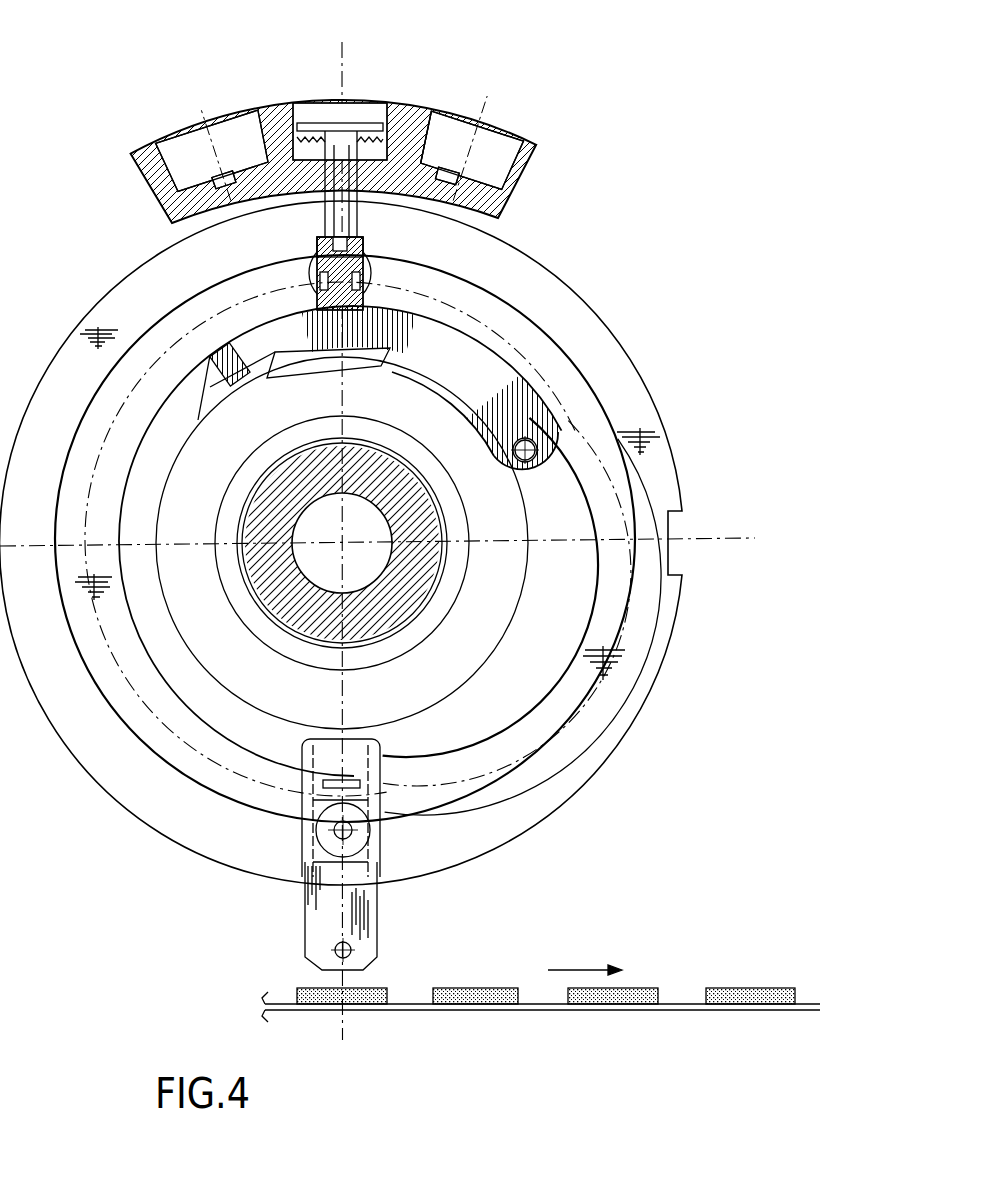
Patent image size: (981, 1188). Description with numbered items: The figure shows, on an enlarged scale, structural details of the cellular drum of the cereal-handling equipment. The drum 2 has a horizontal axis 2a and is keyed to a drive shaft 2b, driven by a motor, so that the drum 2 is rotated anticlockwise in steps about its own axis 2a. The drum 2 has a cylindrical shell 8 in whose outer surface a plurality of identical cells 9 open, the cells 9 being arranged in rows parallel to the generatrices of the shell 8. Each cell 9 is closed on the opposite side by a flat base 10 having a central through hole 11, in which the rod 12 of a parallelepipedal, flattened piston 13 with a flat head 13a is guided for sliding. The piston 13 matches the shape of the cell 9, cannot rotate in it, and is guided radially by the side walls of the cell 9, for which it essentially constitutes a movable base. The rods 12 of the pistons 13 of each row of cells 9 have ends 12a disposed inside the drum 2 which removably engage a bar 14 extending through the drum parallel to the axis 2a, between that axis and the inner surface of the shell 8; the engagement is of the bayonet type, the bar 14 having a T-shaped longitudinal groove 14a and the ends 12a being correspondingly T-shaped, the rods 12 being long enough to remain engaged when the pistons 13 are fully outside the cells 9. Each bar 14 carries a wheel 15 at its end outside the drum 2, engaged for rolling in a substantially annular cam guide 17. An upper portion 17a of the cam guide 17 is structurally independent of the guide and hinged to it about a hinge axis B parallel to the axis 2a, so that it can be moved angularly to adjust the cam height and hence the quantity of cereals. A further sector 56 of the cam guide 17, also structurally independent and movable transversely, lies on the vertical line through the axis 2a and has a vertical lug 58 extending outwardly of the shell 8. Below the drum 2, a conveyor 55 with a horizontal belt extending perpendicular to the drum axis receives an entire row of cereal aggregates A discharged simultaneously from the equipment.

The drum 2 is at (530, 124).
The horizontal axis 2a is at (338, 545).
The drive shaft 2b is at (402, 594).
The cylindrical shell 8 is at (262, 108).
The cell 9 is at (443, 135).
The flat base 10 is at (498, 180).
The central through hole 11 is at (447, 178).
The rod 12 is at (335, 217).
The end of rod 12a is at (362, 255).
The piston 13 is at (350, 127).
The flat head 13a is at (308, 118).
The bar 14 is at (318, 283).
The T-shaped longitudinal groove 14a is at (318, 256).
The wheel 15 is at (391, 313).
The cam guide 17 is at (75, 426).
The upper portion of cam guide 17a is at (243, 357).
The conveyor 55 is at (552, 1010).
The movable sector 56 is at (376, 854).
The vertical lug 58 is at (320, 878).
The cereal aggregate A is at (465, 1005).
The hinge axis B is at (520, 458).